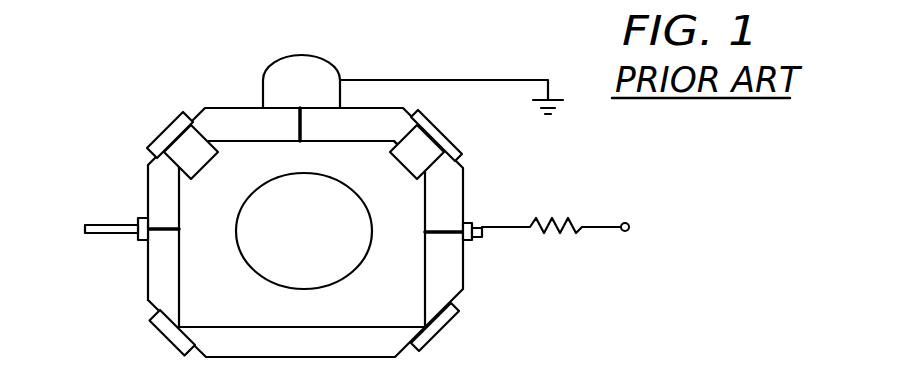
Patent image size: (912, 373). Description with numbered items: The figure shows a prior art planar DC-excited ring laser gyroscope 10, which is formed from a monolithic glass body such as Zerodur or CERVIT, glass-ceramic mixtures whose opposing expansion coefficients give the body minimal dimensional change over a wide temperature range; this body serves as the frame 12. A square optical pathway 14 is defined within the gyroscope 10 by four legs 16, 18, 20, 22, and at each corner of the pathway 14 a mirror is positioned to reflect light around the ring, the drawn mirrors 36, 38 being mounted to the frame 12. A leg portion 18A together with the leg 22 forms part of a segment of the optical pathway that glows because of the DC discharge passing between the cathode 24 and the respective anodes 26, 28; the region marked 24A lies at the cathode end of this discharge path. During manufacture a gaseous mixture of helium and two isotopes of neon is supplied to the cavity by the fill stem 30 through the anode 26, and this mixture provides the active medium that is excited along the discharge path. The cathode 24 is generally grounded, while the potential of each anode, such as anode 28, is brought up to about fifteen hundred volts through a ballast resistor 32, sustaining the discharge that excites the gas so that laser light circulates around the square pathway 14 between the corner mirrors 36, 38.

The ring laser gyroscope 10 is at (521, 177).
The frame 12 is at (427, 270).
The square optical pathway 14 is at (170, 268).
The leg 16 is at (335, 326).
The leg 18 is at (181, 290).
The leg portion 18A is at (218, 197).
The leg 20 is at (424, 210).
The leg 22 is at (242, 142).
The cathode 24 is at (275, 83).
The terminal connection 24A is at (422, 189).
The anode 26 is at (138, 217).
The anode 28 is at (468, 222).
The fill stem 30 is at (95, 224).
The ballast resistor 32 is at (561, 233).
The mirror 36 is at (443, 126).
The mirror 38 is at (442, 328).